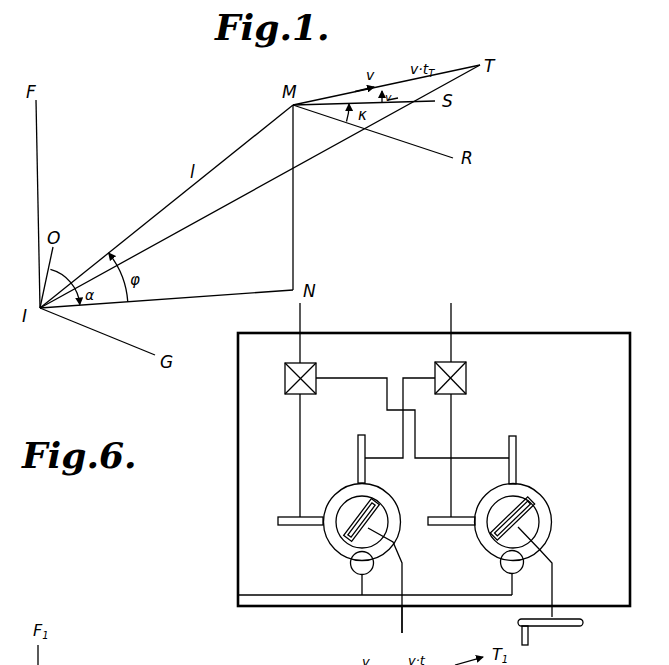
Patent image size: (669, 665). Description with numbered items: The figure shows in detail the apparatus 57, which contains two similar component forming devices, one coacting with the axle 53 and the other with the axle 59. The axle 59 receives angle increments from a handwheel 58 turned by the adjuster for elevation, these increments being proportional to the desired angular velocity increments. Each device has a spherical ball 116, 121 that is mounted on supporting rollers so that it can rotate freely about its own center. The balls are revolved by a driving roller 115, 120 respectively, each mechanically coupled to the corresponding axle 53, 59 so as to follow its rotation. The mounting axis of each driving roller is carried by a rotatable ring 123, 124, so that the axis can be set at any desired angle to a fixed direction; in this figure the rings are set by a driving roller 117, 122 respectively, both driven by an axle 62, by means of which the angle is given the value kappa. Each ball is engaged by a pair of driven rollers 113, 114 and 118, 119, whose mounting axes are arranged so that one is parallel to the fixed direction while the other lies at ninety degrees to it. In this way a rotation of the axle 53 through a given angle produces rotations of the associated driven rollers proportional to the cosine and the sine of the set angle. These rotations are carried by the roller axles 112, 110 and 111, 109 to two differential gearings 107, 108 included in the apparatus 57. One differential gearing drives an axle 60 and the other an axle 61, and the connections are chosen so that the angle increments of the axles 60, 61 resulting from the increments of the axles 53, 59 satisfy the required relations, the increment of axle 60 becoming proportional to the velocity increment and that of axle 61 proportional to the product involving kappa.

The axle 53 is at (402, 622).
The apparatus 57 is at (238, 393).
The handwheel 58 is at (546, 623).
The axle 59 is at (556, 613).
The axle 60 is at (300, 322).
The axle 61 is at (451, 320).
The axle 62 is at (238, 596).
The differential gearing 107 is at (316, 376).
The differential gearing 108 is at (466, 374).
The axle 109 is at (344, 380).
The axle 110 is at (415, 378).
The axle 111 is at (451, 418).
The axle 112 is at (299, 459).
The driven roller 113 is at (306, 526).
The driven roller 114 is at (358, 452).
The driving roller 115 is at (373, 512).
The spherical ball 116 is at (393, 540).
The driving roller 117 is at (349, 568).
The driven roller 118 is at (453, 525).
The driven roller 119 is at (516, 445).
The driving roller 120 is at (533, 510).
The spherical ball 121 is at (546, 533).
The driving roller 122 is at (503, 568).
The rotatable ring 123 is at (366, 493).
The rotatable ring 124 is at (519, 492).